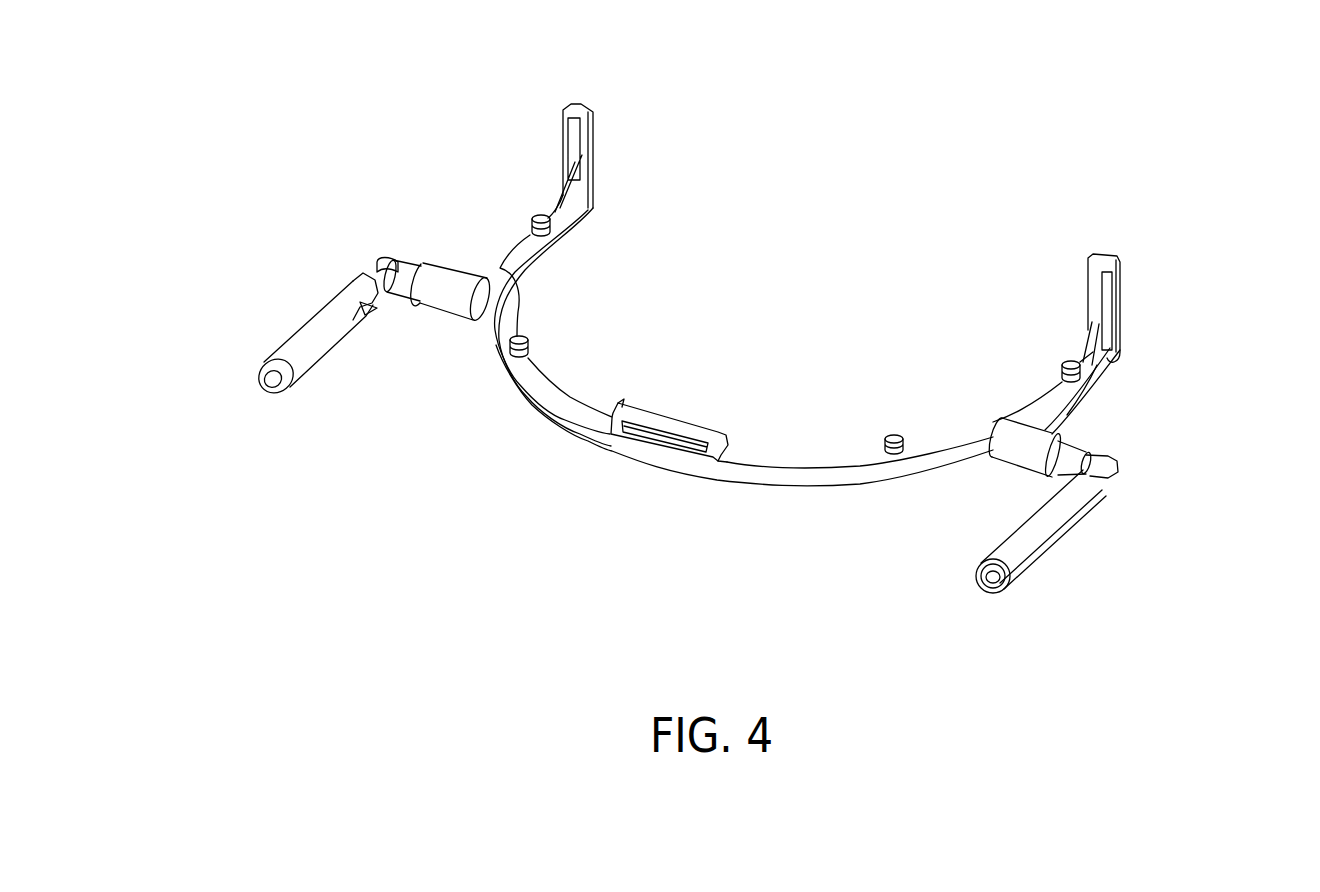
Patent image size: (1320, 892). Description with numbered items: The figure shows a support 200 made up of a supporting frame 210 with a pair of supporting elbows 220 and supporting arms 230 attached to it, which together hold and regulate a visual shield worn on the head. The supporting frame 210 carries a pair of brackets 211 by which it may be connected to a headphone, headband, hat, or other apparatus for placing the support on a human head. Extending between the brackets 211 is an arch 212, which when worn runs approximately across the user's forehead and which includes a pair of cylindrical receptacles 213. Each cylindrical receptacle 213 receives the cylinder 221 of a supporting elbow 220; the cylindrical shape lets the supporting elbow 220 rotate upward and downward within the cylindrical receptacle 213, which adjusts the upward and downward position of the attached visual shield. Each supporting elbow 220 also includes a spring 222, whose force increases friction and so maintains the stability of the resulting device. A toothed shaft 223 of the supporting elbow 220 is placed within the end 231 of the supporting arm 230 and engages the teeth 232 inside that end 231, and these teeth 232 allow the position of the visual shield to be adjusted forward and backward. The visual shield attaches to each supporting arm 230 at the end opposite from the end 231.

The support 200 is at (508, 595).
The supporting frame 210 is at (773, 325).
The bracket 211 is at (1114, 298).
The arch 212 is at (785, 483).
The cylindrical receptacle 213 is at (452, 282).
The supporting elbow 220 is at (375, 248).
The cylinder 221 is at (1072, 453).
The spring 222 is at (1103, 480).
The toothed shaft 223 is at (371, 272).
The supporting arm 230 is at (299, 308).
The end 231 is at (363, 307).
The teeth 232 is at (276, 392).